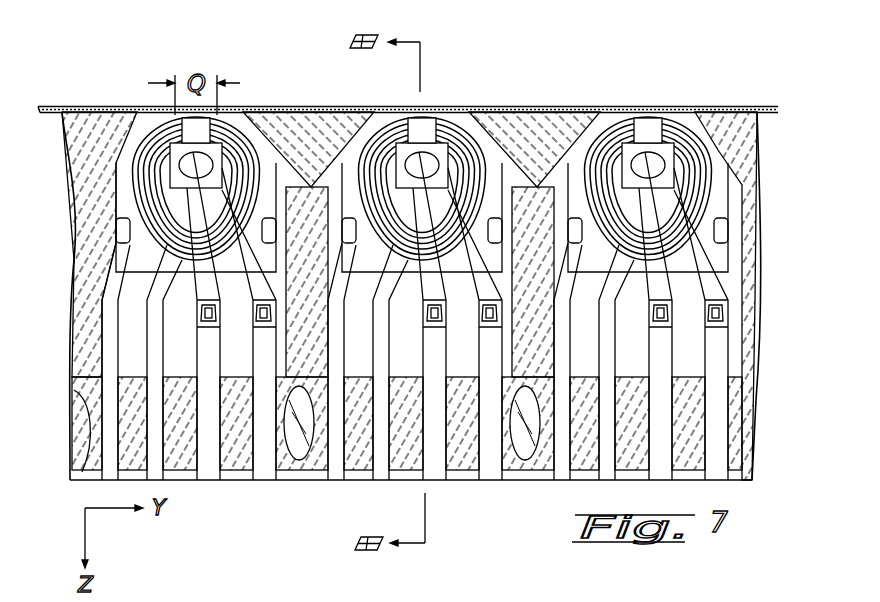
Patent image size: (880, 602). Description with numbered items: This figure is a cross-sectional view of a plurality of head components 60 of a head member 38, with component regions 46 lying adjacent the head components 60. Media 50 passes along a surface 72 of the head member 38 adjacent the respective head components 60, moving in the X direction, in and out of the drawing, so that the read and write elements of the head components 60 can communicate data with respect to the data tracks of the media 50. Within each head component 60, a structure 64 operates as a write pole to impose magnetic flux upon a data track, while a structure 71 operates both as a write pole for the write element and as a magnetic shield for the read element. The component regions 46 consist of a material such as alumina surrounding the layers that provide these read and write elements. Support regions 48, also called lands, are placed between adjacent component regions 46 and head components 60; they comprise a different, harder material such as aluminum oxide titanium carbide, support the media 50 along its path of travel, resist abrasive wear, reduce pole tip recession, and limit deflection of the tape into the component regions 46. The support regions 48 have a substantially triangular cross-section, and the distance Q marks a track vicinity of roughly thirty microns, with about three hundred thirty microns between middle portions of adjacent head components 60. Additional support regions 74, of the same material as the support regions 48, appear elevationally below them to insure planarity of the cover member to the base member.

The head member 38 is at (770, 221).
The component regions 46 is at (422, 246).
The support regions 48 is at (326, 128).
The media 50 is at (55, 106).
The head components 60 is at (377, 118).
The write pole structure 64 is at (647, 112).
The write pole and shield structure 71 is at (682, 108).
The surface 72 is at (98, 107).
The additional support regions 74 is at (297, 440).